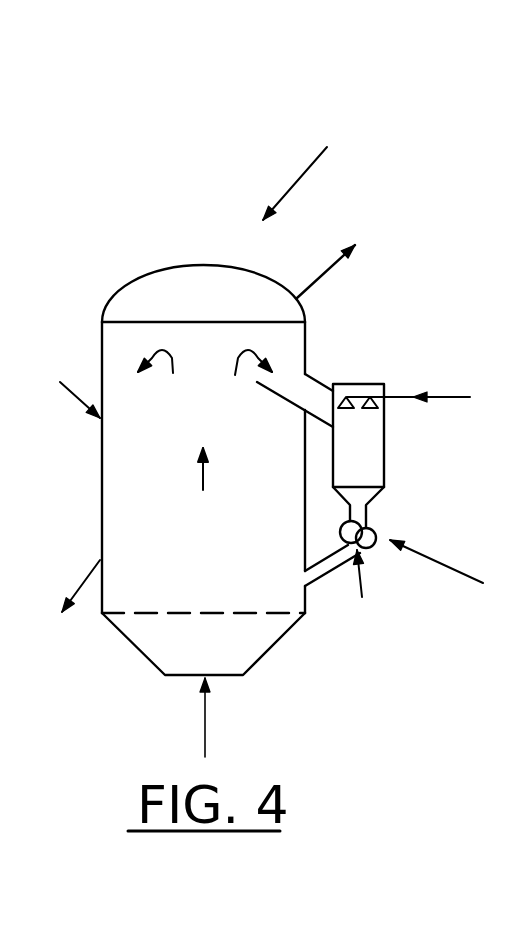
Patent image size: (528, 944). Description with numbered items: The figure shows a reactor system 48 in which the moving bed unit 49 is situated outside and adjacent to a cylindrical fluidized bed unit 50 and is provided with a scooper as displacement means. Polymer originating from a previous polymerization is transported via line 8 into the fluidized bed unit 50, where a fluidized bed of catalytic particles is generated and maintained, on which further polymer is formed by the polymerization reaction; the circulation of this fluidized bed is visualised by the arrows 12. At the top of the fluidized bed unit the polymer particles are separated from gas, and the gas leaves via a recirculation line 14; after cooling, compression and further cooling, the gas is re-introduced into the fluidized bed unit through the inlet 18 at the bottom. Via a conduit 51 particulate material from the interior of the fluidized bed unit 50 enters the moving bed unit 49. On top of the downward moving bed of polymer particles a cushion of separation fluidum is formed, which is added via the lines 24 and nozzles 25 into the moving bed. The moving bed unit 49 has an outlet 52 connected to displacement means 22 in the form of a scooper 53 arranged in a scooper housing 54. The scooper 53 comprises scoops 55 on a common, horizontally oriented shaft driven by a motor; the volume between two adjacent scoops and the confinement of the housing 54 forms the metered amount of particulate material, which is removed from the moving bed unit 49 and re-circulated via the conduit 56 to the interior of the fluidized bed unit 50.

The line 8 is at (60, 382).
The arrows 12 is at (173, 363).
The recirculation line 14 is at (318, 275).
The inlet 18 is at (205, 737).
The displacement means 22 is at (448, 579).
The lines 24 is at (445, 397).
The nozzles 25 is at (372, 397).
The reactor system 48 is at (311, 169).
The moving bed unit 49 is at (384, 445).
The fluidized bed unit 50 is at (100, 522).
The conduit 51 is at (317, 380).
The outlet 52 is at (370, 503).
The scooper 53 is at (362, 597).
The scooper housing 54 is at (345, 522).
The scoops 55 is at (375, 548).
The conduit 56 is at (322, 578).